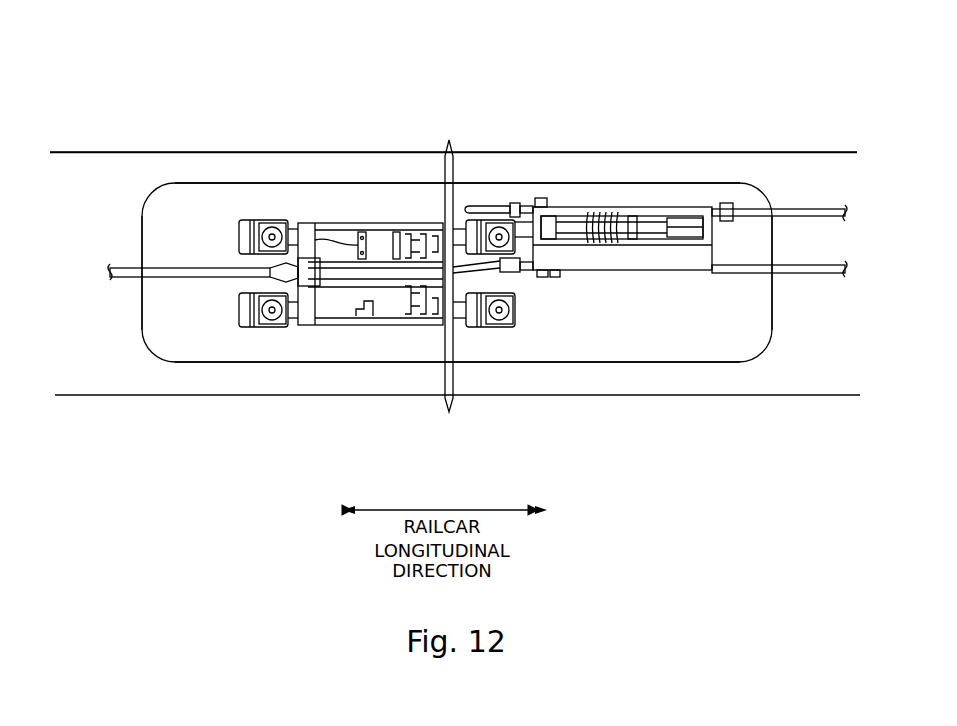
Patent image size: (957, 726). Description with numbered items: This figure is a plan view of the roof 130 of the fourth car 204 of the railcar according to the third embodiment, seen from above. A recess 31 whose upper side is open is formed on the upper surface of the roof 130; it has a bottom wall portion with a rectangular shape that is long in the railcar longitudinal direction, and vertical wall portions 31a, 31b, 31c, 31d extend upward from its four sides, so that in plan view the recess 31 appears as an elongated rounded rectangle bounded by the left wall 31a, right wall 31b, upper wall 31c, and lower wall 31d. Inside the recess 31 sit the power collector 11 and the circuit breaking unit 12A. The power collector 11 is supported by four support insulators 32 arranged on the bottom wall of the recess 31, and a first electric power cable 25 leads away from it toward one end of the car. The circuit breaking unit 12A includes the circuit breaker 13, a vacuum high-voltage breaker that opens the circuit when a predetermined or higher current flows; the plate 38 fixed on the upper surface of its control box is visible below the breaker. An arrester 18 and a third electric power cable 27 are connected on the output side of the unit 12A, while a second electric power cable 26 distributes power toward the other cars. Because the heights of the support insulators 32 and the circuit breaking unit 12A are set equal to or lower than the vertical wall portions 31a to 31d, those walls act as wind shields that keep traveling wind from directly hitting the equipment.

The fourth car 204 is at (161, 147).
The roof 130 is at (205, 172).
The recess 31 is at (168, 340).
The vertical wall portion 31a is at (143, 311).
The vertical wall portion 31b is at (772, 296).
The vertical wall portion 31c is at (394, 181).
The vertical wall portion 31d is at (380, 363).
The first electric power cable 25 is at (205, 280).
The power collector 11 is at (343, 217).
The support insulator 32 is at (260, 221).
The arrester 18 is at (478, 207).
The circuit breaking unit 12A is at (635, 202).
The circuit breaker 13 is at (605, 213).
The plate 38 is at (613, 262).
The third electric power cable 27 is at (800, 208).
The second electric power cable 26 is at (808, 274).